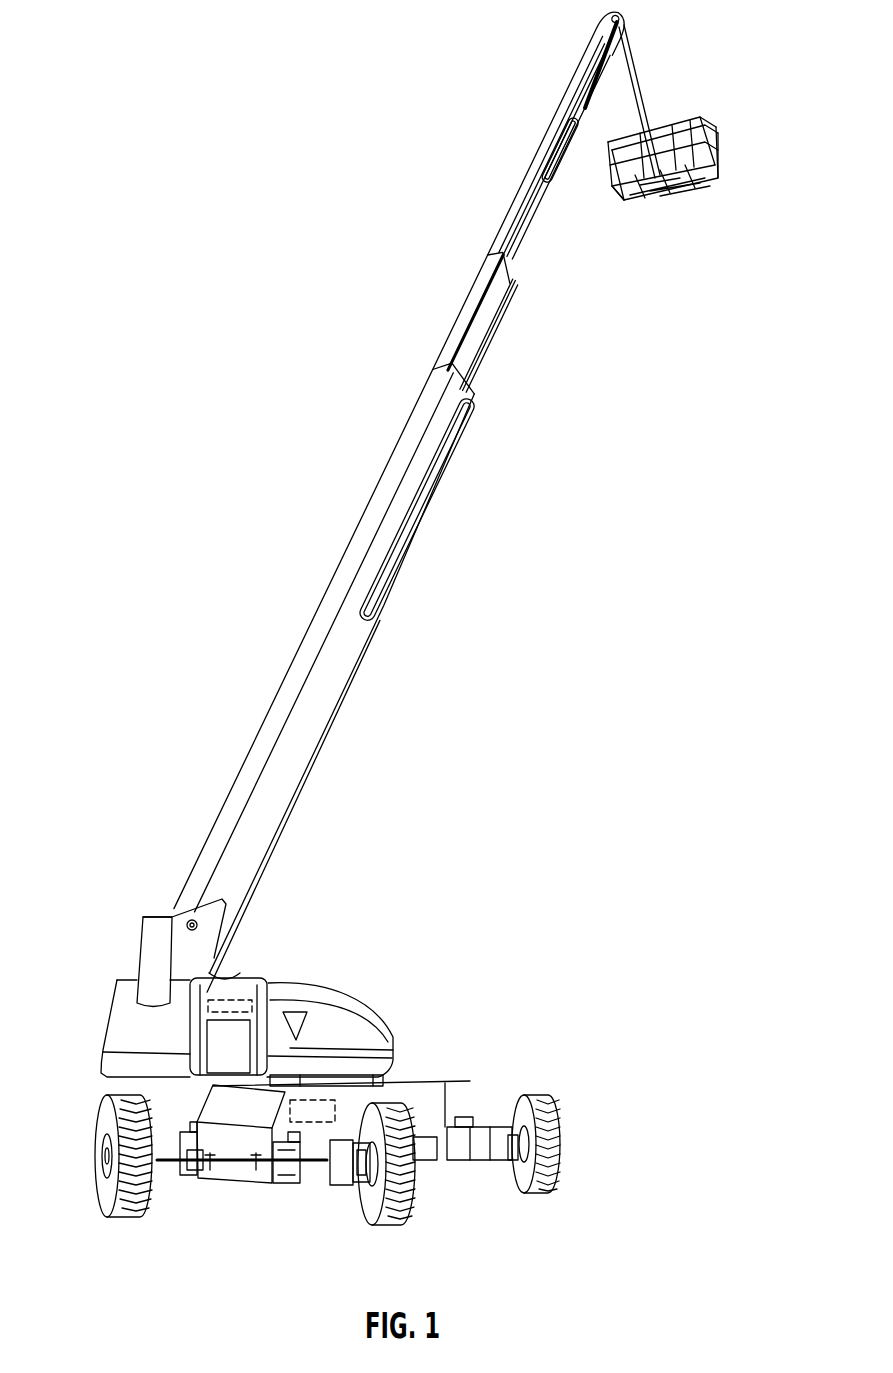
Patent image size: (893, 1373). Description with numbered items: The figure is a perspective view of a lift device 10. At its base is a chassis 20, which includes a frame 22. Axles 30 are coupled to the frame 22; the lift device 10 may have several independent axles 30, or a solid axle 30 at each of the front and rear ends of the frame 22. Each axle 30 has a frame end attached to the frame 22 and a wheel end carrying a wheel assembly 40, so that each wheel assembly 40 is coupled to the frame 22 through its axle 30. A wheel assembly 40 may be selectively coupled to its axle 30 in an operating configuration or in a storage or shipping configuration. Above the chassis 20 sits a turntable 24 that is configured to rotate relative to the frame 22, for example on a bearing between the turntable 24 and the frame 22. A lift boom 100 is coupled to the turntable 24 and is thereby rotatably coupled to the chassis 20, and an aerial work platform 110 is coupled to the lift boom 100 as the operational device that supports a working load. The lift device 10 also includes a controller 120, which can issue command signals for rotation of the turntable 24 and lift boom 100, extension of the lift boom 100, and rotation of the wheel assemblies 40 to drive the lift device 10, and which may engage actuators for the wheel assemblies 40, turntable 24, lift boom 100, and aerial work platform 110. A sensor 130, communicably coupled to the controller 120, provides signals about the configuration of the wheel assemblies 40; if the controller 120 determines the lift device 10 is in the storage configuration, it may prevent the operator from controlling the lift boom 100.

The lift device 10 is at (419, 111).
The lift boom 100 is at (318, 614).
The aerial work platform 110 is at (718, 155).
The controller 120 is at (245, 997).
The turntable 24 is at (378, 1035).
The sensor 130 is at (340, 1107).
The chassis 20 is at (497, 1064).
The frame 22 is at (437, 1098).
The axle 30 is at (350, 1186).
The wheel assembly 40 is at (115, 1216).